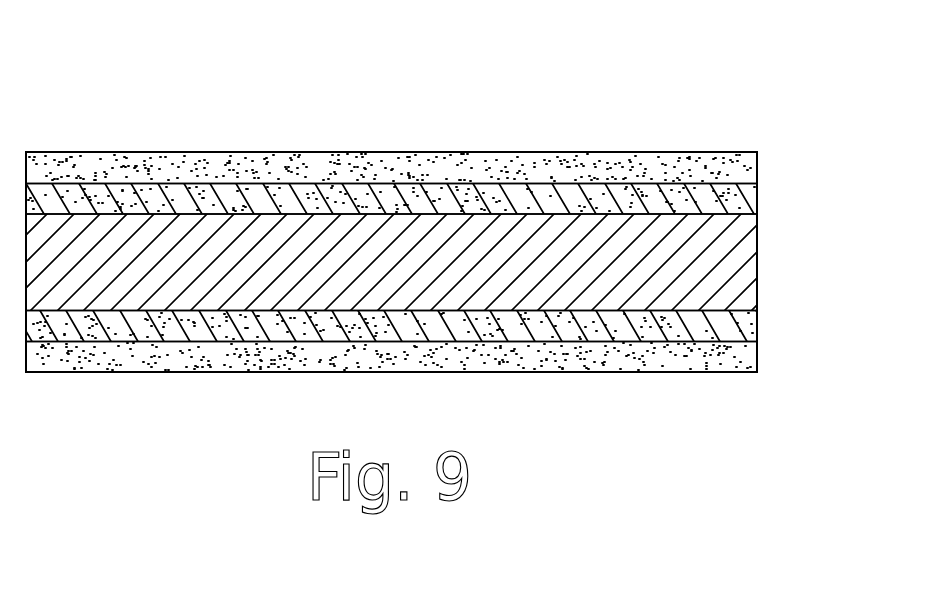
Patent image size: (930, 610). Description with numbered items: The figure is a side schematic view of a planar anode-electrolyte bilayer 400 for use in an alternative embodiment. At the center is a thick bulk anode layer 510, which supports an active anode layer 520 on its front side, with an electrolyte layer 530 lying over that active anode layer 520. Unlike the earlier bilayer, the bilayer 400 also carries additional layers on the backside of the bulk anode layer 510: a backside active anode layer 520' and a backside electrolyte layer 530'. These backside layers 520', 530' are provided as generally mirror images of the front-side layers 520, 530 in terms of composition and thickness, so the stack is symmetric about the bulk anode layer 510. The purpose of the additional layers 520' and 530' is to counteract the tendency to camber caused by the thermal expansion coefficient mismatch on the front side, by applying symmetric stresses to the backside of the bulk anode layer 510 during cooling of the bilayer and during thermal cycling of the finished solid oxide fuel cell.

The anode-electrolyte bilayer 400 is at (147, 69).
The bulk anode layer 510 is at (758, 265).
The active anode layer 520 is at (444, 183).
The backside active anode layer 520' is at (446, 359).
The electrolyte layer 530 is at (411, 128).
The backside electrolyte layer 530' is at (391, 400).